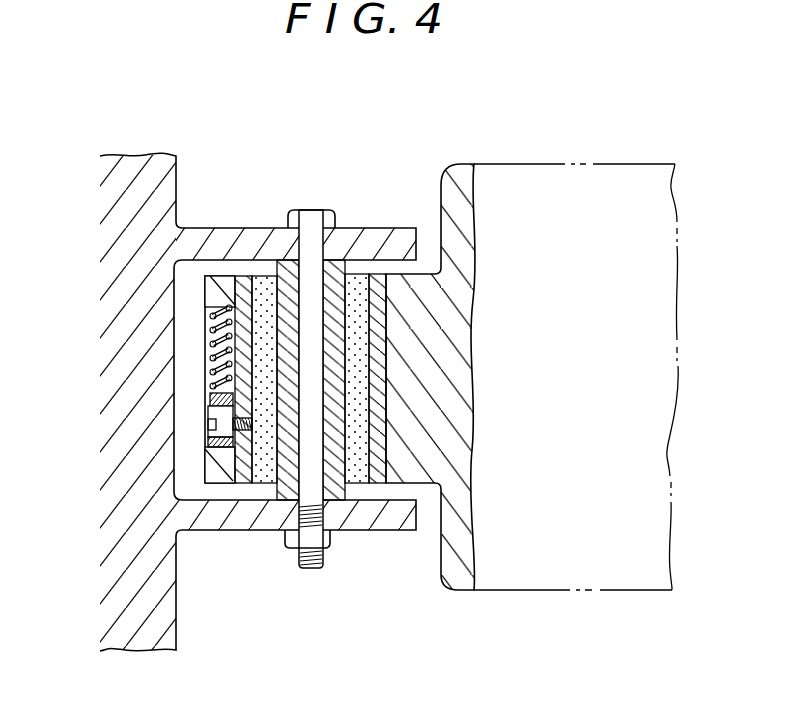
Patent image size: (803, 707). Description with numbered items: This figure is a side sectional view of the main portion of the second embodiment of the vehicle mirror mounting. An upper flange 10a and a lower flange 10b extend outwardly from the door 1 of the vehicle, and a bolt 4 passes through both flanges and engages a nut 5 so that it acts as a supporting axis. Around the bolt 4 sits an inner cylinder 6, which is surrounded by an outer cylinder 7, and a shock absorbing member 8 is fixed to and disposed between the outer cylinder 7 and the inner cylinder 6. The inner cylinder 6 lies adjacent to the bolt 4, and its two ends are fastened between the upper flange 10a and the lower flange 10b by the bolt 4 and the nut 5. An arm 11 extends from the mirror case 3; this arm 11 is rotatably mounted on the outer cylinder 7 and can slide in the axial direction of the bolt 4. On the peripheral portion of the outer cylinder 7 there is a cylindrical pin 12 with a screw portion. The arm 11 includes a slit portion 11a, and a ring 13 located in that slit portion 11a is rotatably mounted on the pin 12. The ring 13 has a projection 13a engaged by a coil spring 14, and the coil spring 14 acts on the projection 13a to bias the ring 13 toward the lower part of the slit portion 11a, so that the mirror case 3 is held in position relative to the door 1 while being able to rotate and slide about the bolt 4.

The door 1 is at (163, 622).
The mirror case 3 is at (452, 582).
The bolt 4 is at (312, 217).
The nut 5 is at (288, 542).
The inner cylinder 6 is at (288, 262).
The outer cylinder 7 is at (380, 277).
The shock absorbing member 8 is at (357, 283).
The upper flange 10a is at (228, 238).
The lower flange 10b is at (245, 520).
The arm 11 is at (413, 475).
The slit portion 11a is at (205, 308).
The cylindrical pin 12 is at (205, 433).
The ring 13 is at (205, 407).
The projection 13a is at (205, 392).
The coil spring 14 is at (205, 340).